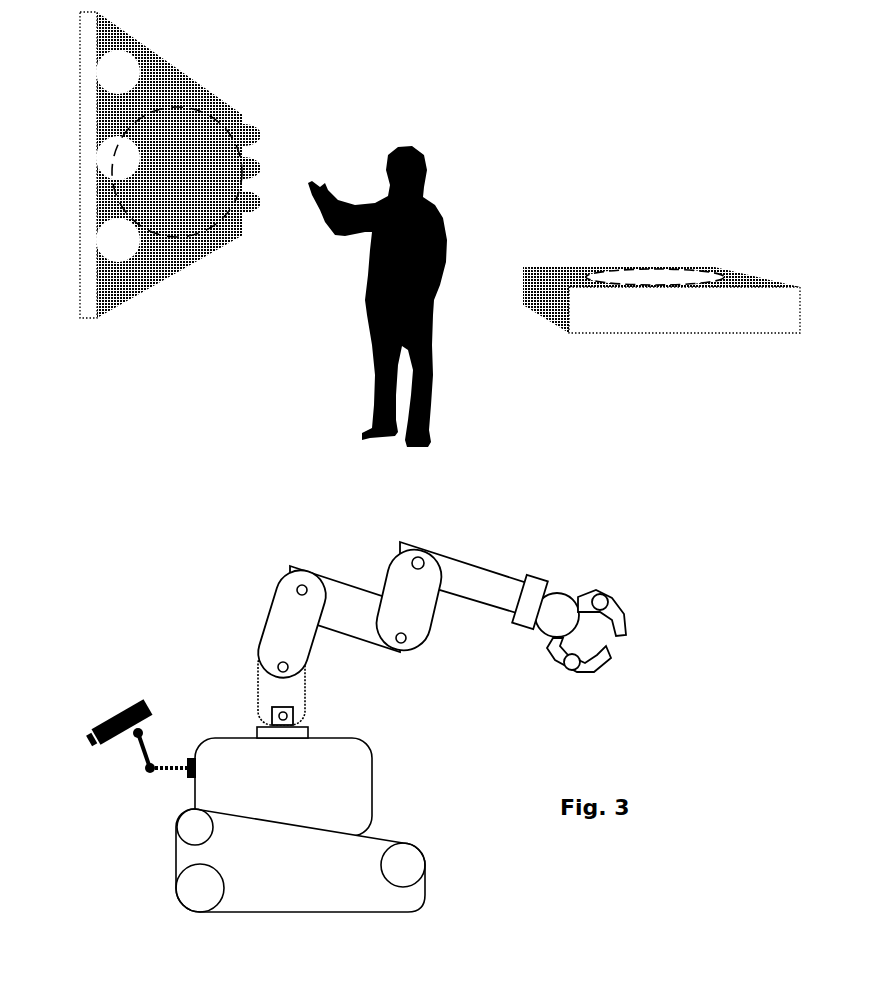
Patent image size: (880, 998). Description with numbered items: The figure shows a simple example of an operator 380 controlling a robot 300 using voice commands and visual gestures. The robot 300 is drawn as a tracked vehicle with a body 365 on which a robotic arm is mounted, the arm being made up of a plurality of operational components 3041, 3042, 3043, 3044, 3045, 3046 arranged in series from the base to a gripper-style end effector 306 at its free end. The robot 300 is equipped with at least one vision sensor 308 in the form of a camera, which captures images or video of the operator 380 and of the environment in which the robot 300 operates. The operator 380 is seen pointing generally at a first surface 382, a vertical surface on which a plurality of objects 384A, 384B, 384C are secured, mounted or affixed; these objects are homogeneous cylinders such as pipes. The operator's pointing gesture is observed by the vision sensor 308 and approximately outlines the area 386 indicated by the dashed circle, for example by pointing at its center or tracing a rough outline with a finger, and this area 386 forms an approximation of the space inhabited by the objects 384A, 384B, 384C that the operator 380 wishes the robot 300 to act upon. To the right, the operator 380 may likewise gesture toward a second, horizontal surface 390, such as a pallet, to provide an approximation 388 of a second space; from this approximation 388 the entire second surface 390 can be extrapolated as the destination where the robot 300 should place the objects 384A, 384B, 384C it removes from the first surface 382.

The robot 300 is at (150, 597).
The operational component 3041 is at (270, 713).
The operational component 3042 is at (280, 665).
The operational component 3043 is at (295, 574).
The operational component 3044 is at (402, 645).
The operational component 3045 is at (413, 542).
The operational component 3046 is at (532, 576).
The gripper-style end effector 306 is at (633, 594).
The vision sensor 308 is at (76, 733).
The robot body 365 is at (345, 738).
The operator 380 is at (450, 182).
The first surface 382 is at (270, 104).
The object 384A is at (92, 72).
The object 384B is at (95, 158).
The object 384C is at (92, 240).
The area 386 is at (200, 247).
The approximation 388 is at (616, 268).
The second surface 390 is at (563, 192).